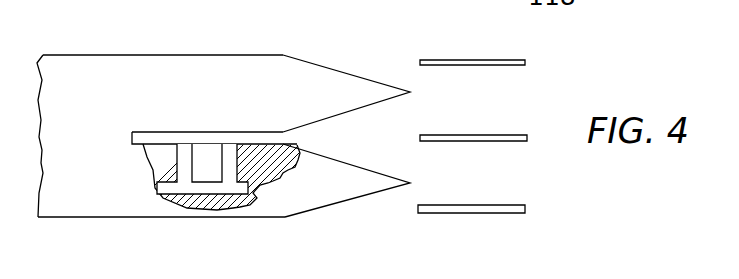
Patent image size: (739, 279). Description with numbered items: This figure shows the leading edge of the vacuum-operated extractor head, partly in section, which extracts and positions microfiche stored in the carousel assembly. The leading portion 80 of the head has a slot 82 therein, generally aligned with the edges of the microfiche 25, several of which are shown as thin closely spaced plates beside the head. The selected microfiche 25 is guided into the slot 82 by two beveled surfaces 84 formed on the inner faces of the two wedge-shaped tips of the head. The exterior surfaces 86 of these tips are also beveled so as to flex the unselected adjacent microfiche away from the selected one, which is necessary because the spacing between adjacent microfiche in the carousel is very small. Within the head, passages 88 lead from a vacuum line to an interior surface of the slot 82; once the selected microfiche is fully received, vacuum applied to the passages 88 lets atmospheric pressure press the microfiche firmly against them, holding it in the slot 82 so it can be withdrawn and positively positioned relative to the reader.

The leading portion 80 is at (55, 200).
The slot 82 is at (199, 132).
The beveled surfaces 84 is at (353, 115).
The exterior surfaces 86 is at (333, 70).
The passages 88 is at (192, 187).
The microfiche 25 is at (468, 66).